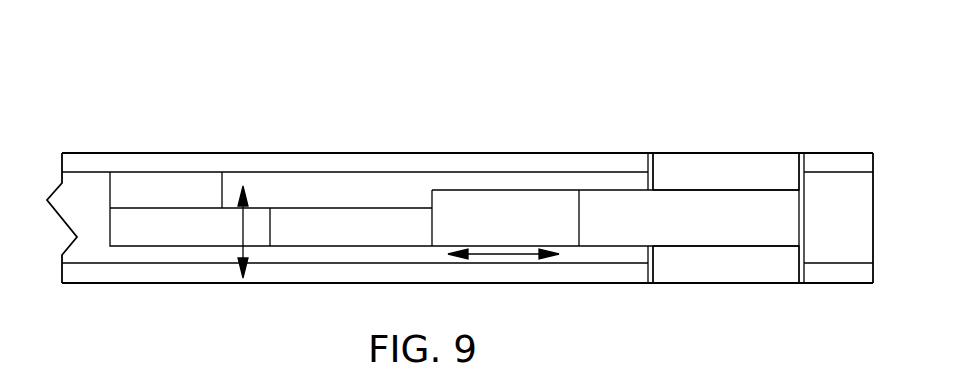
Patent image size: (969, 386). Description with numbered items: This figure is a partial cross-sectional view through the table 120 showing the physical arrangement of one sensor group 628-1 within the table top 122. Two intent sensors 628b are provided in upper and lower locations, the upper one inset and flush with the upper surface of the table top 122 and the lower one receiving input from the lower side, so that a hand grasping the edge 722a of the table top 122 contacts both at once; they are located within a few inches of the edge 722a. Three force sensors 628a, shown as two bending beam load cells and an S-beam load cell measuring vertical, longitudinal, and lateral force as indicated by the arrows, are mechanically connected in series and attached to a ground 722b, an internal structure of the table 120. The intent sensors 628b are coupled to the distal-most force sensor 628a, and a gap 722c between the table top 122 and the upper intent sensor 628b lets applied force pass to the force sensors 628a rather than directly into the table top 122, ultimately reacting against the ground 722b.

The table 120 is at (735, 61).
The table top 122 is at (448, 153).
The sensor group 628-1 is at (718, 125).
The force sensors 628a is at (454, 232).
The intent sensors 628b is at (726, 218).
The edges 722a is at (868, 245).
The ground 722b is at (166, 190).
The gap 722c is at (646, 153).